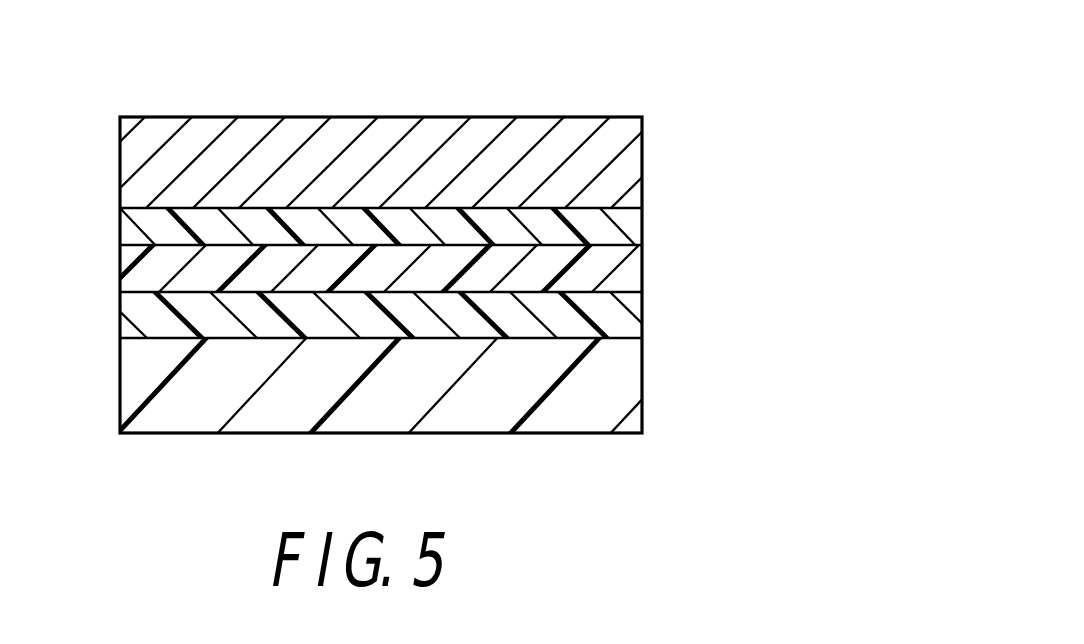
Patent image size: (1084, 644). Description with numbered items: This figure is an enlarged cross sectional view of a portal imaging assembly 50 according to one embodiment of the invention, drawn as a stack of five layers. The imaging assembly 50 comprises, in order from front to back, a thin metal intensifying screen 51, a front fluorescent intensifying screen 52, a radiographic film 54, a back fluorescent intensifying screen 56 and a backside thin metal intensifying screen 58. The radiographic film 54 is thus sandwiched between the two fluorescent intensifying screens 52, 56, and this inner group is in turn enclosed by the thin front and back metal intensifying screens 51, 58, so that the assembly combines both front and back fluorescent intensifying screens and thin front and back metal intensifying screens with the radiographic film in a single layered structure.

The imaging assembly 50 is at (626, 83).
The thin metal intensifying screen 51 is at (643, 165).
The front fluorescent intensifying screen 52 is at (643, 230).
The radiographic film 54 is at (643, 273).
The back fluorescent intensifying screen 56 is at (643, 320).
The backside thin metal intensifying screen 58 is at (643, 387).